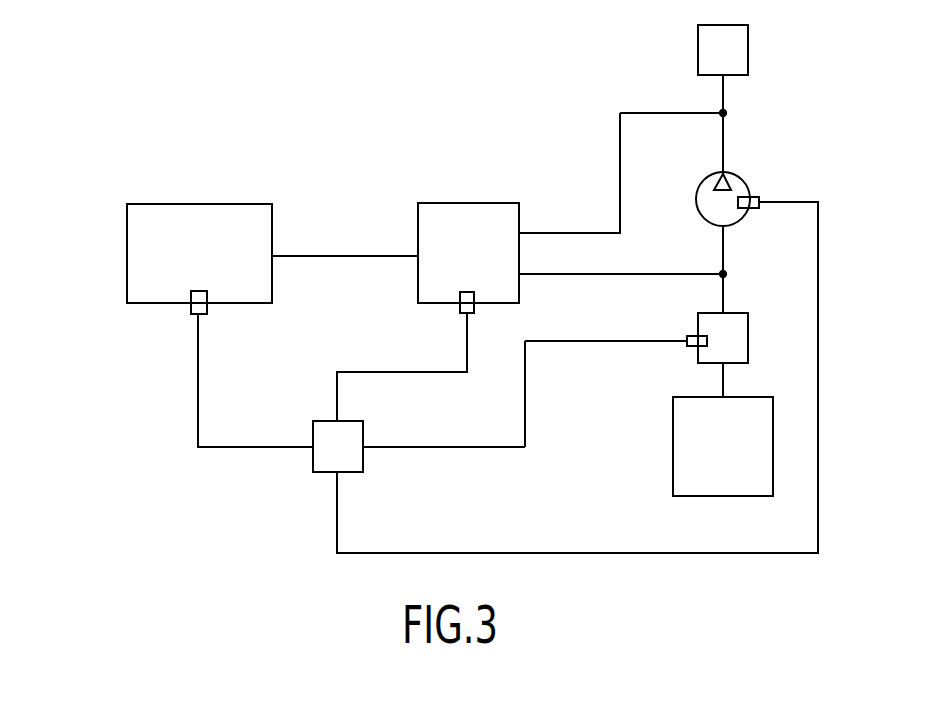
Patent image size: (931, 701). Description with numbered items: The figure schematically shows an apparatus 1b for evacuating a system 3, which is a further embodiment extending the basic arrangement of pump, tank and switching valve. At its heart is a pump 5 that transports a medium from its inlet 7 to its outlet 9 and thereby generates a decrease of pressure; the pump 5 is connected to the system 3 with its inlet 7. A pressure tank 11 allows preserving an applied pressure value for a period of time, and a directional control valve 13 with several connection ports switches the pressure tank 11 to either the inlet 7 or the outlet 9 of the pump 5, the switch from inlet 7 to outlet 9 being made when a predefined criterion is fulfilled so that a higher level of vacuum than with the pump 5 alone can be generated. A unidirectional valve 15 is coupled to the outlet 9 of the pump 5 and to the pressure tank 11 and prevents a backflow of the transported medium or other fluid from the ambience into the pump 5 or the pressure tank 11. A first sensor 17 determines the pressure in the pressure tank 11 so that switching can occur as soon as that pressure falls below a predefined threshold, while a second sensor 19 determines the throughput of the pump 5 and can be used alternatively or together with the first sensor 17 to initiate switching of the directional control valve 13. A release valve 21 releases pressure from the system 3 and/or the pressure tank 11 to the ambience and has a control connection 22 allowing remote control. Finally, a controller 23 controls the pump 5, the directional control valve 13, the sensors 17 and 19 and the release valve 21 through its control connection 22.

The apparatus 1b is at (82, 111).
The system 3 is at (673, 452).
The pump 5 is at (742, 180).
The inlet 7 is at (722, 227).
The outlet 9 is at (723, 172).
The pressure tank 11 is at (127, 247).
The directional control valve 13 is at (468, 202).
The unidirectional valve 15 is at (748, 48).
The first sensor 17 is at (190, 313).
The second sensor 19 is at (759, 198).
The release valve 21 is at (698, 327).
The control connection 22 is at (687, 345).
The controller 23 is at (313, 465).